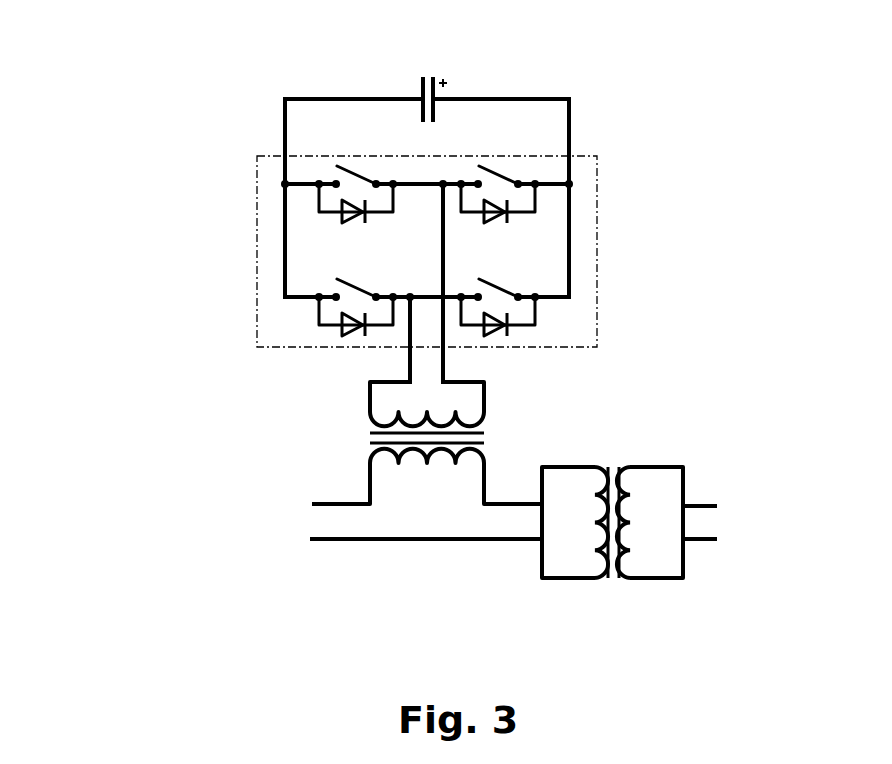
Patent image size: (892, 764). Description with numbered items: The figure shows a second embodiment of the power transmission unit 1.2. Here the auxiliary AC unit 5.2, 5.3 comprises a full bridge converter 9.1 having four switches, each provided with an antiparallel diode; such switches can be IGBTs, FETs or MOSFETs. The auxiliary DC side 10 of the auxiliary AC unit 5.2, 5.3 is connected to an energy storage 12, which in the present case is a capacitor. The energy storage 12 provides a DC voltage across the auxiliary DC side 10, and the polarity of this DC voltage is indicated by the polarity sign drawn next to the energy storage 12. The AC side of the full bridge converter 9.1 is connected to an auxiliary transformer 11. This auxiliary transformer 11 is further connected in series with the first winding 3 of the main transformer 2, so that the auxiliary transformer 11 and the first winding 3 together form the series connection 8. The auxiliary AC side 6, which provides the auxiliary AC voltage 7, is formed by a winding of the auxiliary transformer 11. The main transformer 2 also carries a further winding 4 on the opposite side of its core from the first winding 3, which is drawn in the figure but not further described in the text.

The power transmission unit 1.2 is at (437, 240).
The main transformer 2 is at (629, 526).
The first winding 3 is at (595, 570).
The secondary winding 4 is at (635, 575).
The auxiliary AC unit 5.2 is at (228, 245).
The auxiliary AC unit 5.3 is at (320, 240).
The auxiliary AC side 6 is at (418, 497).
The auxiliary AC voltage 7 is at (382, 476).
The series connection 8 is at (312, 535).
The full bridge converter 9.1 is at (379, 240).
The auxiliary DC side 10 is at (472, 77).
The auxiliary transformer 11 is at (382, 443).
The energy storage 12 is at (427, 68).